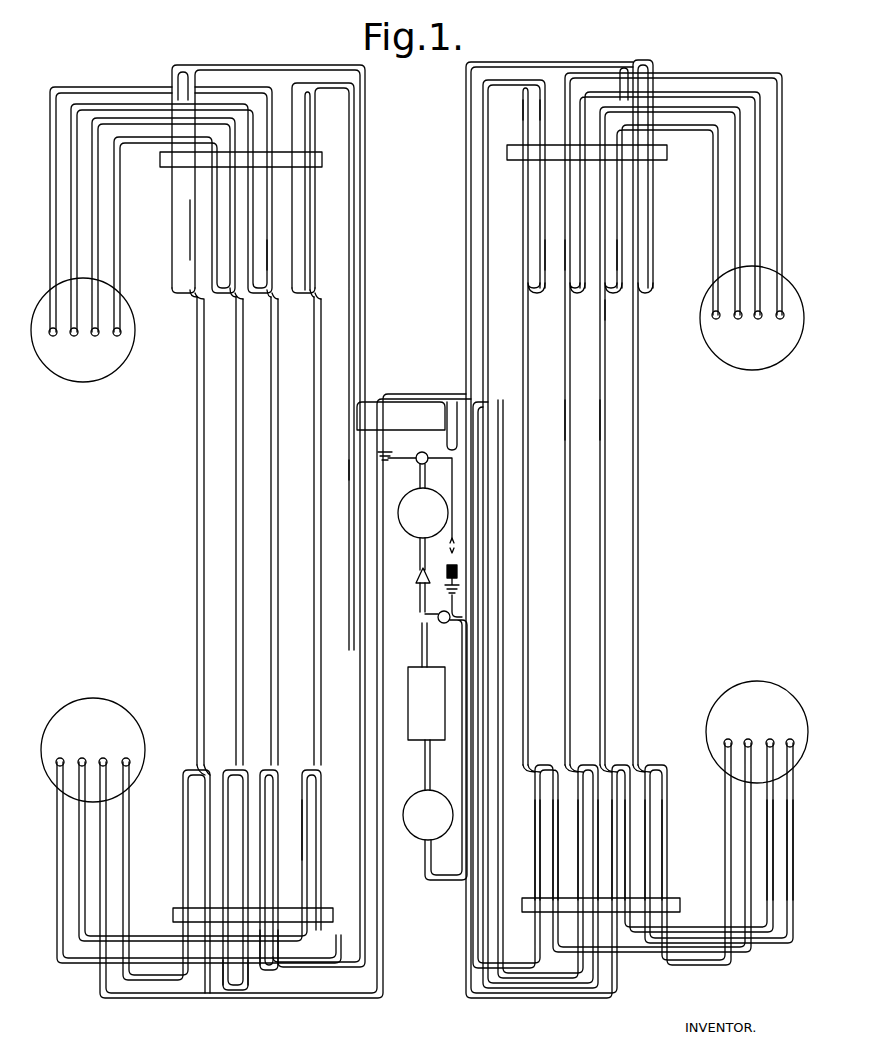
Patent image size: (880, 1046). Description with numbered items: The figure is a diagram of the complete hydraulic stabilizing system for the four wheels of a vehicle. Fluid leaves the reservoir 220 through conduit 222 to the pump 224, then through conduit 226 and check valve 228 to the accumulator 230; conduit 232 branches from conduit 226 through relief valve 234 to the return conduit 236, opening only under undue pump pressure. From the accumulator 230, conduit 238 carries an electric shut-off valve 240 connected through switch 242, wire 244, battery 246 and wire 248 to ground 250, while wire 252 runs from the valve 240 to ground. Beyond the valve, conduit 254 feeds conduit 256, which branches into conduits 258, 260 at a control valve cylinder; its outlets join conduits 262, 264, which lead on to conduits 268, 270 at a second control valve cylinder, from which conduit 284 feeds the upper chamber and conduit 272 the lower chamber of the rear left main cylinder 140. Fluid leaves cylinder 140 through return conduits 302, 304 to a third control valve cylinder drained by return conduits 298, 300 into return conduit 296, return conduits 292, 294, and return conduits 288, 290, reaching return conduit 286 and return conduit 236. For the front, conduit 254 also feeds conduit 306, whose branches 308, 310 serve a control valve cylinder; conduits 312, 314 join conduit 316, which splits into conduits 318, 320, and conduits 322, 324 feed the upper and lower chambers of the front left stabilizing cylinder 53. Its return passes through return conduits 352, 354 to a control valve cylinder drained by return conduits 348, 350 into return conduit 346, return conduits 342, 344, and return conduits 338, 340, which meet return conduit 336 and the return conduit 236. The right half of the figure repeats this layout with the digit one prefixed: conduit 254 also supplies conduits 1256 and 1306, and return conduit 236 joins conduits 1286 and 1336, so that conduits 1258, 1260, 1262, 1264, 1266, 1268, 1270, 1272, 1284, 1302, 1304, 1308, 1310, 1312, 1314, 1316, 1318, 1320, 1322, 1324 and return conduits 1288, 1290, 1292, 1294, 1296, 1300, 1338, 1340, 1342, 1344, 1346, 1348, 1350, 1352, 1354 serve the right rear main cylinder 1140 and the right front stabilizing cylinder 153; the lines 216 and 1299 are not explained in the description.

The conduit 1310 is at (170, 73).
The conduit 1308 is at (183, 72).
The conduit 1284 is at (196, 140).
The conduit 1272 is at (219, 125).
The return conduit 1304 is at (262, 85).
The return conduit 1302 is at (235, 118).
The return conduit 1340 is at (282, 108).
The return conduit 1338 is at (307, 95).
The conduit 1306 is at (367, 119).
The return conduit 1336 is at (357, 150).
The conduit 1312 is at (172, 213).
The conduit 1314 is at (190, 232).
The conduit 1270 is at (230, 250).
The conduit 1268 is at (267, 261).
The return conduit 1344 is at (313, 238).
The return conduit 1342 is at (295, 245).
The passage 1299 is at (273, 243).
The return conduit 1300 is at (292, 273).
The right rear main cylinder 1140 is at (72, 358).
The conduit 1316 is at (195, 387).
The conduit 1266 is at (236, 410).
The return conduit 1296 is at (277, 370).
The return conduit 1346 is at (312, 350).
The return conduit 1286 is at (352, 468).
The conduit 1256 is at (372, 636).
The conduit 1322 is at (129, 833).
The conduit 1320 is at (183, 841).
The conduit 1318 is at (205, 861).
The conduit 1262 is at (225, 868).
The conduit 1264 is at (243, 883).
The return conduit 1352 is at (80, 883).
The conduit 1324 is at (100, 908).
The return conduit 1354 is at (58, 838).
The right front stabilizing cylinder 153 is at (115, 718).
The return conduit 1348 is at (318, 798).
The return conduit 1350 is at (305, 828).
The return conduit 1294 is at (282, 858).
The return conduit 1292 is at (265, 878).
The conduit 1260 is at (222, 991).
The conduit 1258 is at (243, 991).
The return conduit 1290 is at (257, 978).
The return conduit 1288 is at (280, 983).
The return conduit 236 is at (395, 394).
The conduit 254 is at (447, 400).
The ground 250 is at (385, 450).
The electric shut-off valve 240 is at (419, 452).
The conduit 238 is at (424, 450).
The wire 252 is at (405, 466).
The accumulator 230 is at (423, 513).
The check valve 228 is at (416, 573).
The conduit 226 is at (419, 597).
The conduit 232 is at (436, 618).
The wire 244 is at (452, 503).
The switch 242 is at (455, 543).
The battery 246 is at (458, 566).
The wire 248 is at (458, 586).
The relief valve 234 is at (452, 613).
The return conduit 286 is at (480, 416).
The conduit 256 is at (490, 478).
The pump 224 is at (426, 703).
The conduit 222 is at (425, 763).
The reservoir 220 is at (428, 815).
The return conduit 338 is at (525, 88).
The return conduit 340 is at (532, 95).
The return conduit 302 is at (580, 100).
The return conduit 304 is at (565, 100).
The conduit 272 is at (600, 105).
The conduit 284 is at (618, 95).
The conduit 308 is at (625, 60).
The conduit 310 is at (650, 68).
The conduit 306 is at (468, 119).
The return conduit 336 is at (485, 143).
The return conduit 344 is at (522, 208).
The return conduit 342 is at (540, 236).
The return conduit 298 is at (565, 248).
The return conduit 300 is at (545, 268).
The conduit 312 is at (635, 246).
The conduit 314 is at (620, 260).
The conduit 270 is at (634, 283).
The conduit 268 is at (602, 290).
The conduit 316 is at (640, 353).
The return conduit 346 is at (525, 390).
The return conduit 296 is at (566, 423).
The passage 216 is at (602, 398).
The rear left main cylinder 140 is at (742, 343).
The front left stabilizing cylinder 53 is at (720, 703).
The return conduit 348 is at (528, 833).
The return conduit 350 is at (540, 860).
The return conduit 294 is at (578, 876).
The return conduit 292 is at (597, 803).
The conduit 264 is at (612, 823).
The conduit 262 is at (625, 843).
The conduit 318 is at (645, 853).
The conduit 320 is at (660, 878).
The conduit 322 is at (727, 858).
The conduit 324 is at (748, 820).
The return conduit 352 is at (772, 803).
The return conduit 354 is at (792, 868).
The return conduit 288 is at (565, 993).
The return conduit 290 is at (585, 973).
The conduit 258 is at (605, 993).
The conduit 260 is at (628, 978).